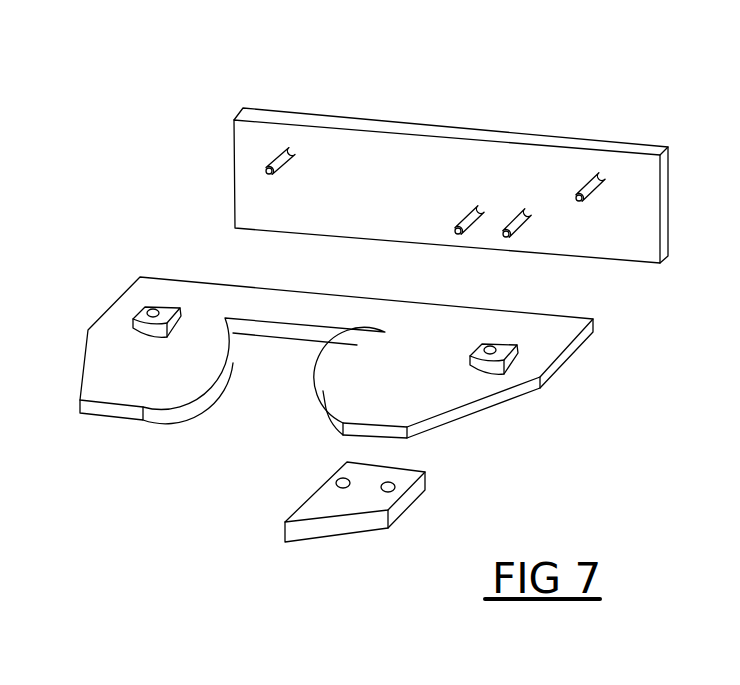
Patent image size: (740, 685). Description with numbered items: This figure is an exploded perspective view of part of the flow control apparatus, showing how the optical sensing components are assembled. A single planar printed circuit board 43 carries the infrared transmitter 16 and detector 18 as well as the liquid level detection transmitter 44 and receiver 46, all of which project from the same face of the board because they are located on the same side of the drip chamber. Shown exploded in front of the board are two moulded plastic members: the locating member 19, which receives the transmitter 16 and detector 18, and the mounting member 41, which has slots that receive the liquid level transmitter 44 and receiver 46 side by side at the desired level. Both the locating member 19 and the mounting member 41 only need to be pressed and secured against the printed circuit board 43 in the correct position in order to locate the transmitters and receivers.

The infrared transmitter 16 is at (285, 147).
The detector 18 is at (597, 172).
The locating member 19 is at (97, 413).
The mounting member 41 is at (330, 503).
The printed circuit board 43 is at (393, 130).
The liquid level detection transmitter 44 is at (478, 204).
The receiver 46 is at (523, 210).